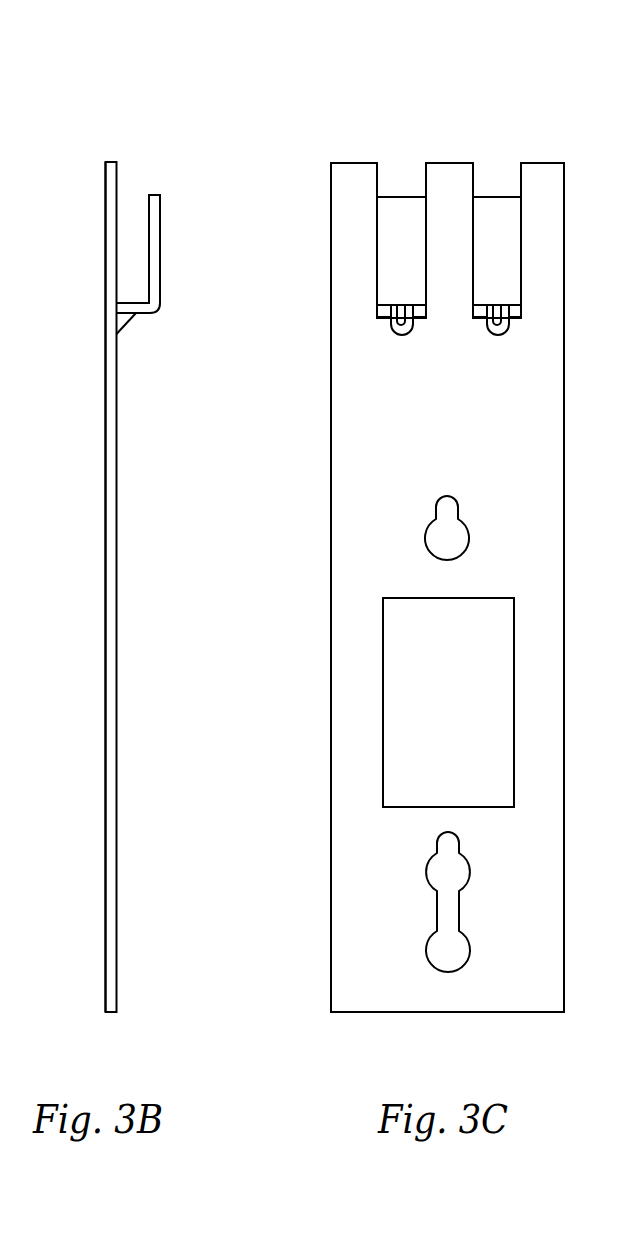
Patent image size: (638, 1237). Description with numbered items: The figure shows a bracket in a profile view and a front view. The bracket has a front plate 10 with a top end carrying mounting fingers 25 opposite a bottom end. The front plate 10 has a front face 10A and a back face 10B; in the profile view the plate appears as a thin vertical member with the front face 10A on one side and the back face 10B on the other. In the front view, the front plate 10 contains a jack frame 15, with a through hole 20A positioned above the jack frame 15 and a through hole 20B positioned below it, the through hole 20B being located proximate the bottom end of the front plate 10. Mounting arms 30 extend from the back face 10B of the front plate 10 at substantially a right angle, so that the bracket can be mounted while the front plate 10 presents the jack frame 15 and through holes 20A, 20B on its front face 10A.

In FIG. 3C, the front plate 10 is at (347, 490).
In FIG. 3B, the front face 10A is at (118, 428).
In FIG. 3B, the back face 10B is at (104, 553).
In FIG. 3C, the jack frame 15 is at (403, 699).
In FIG. 3C, the through hole 20A is at (427, 545).
In FIG. 3C, the through hole 20B is at (437, 915).
In FIG. 3C, the mounting fingers 25 is at (350, 188).
In FIG. 3B, the mounting arms 30 is at (160, 236).
In FIG. 3C, the mounting arms 30 is at (497, 212).